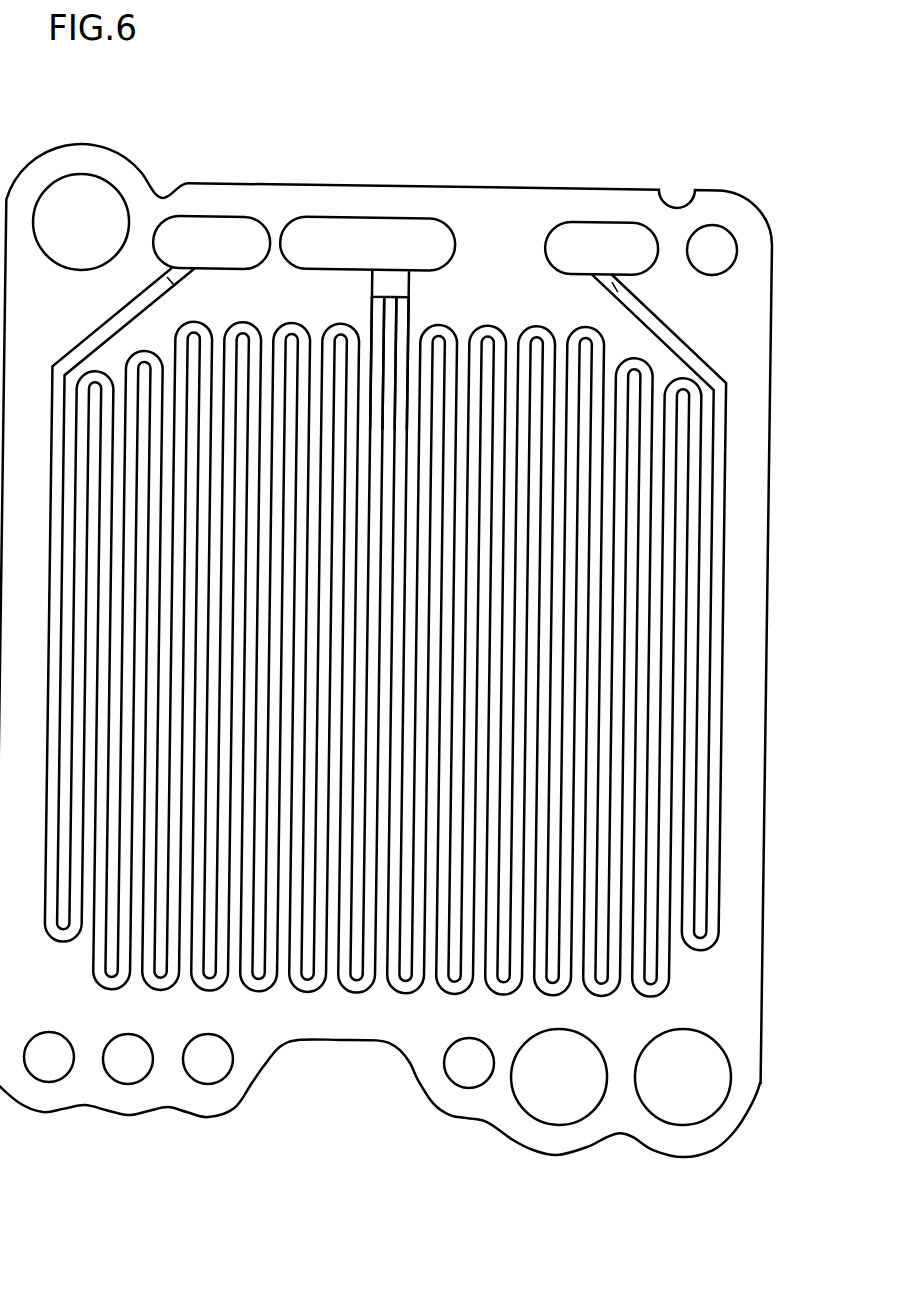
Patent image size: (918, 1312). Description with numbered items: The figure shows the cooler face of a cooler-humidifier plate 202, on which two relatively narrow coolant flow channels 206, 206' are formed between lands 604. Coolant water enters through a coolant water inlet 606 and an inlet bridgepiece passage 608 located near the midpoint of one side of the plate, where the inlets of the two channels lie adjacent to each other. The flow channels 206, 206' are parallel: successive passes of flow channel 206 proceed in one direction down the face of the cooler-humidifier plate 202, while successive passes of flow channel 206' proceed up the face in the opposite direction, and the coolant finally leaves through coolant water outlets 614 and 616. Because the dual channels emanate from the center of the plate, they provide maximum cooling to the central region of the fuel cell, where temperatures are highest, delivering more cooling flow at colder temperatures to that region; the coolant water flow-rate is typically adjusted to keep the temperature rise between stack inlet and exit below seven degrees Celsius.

The cooler-humidifier plate 202 is at (550, 50).
The lands 604 is at (688, 523).
The coolant water inlet 606 is at (380, 270).
The inlet bridgepiece passage 608 is at (402, 282).
The coolant water outlet 614 is at (265, 233).
The coolant water outlet 616 is at (653, 237).
The coolant flow channel 206 is at (335, 354).
The coolant flow channel 206' is at (458, 349).